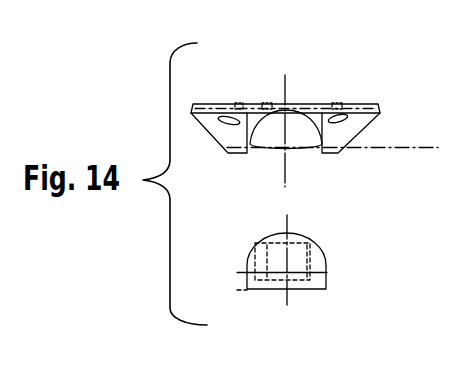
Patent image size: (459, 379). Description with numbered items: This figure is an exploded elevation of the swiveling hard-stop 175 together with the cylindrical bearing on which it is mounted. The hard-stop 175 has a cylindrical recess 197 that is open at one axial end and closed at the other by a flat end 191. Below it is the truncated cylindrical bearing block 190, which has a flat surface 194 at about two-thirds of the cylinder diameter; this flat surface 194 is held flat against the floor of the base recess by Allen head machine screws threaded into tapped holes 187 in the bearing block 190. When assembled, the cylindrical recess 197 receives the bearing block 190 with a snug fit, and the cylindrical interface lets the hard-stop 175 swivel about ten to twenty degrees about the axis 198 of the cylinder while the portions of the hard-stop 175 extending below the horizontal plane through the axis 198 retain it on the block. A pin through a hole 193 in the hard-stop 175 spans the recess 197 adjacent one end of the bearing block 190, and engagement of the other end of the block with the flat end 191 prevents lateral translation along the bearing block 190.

The hard-stop 175 is at (362, 90).
The flat end 191 is at (296, 132).
The hole 193 is at (343, 118).
The cylindrical recess 197 is at (252, 128).
The axis 198 is at (283, 150).
The bearing block 190 is at (328, 255).
The tapped holes 187 is at (287, 258).
The flat surface 194 is at (252, 291).